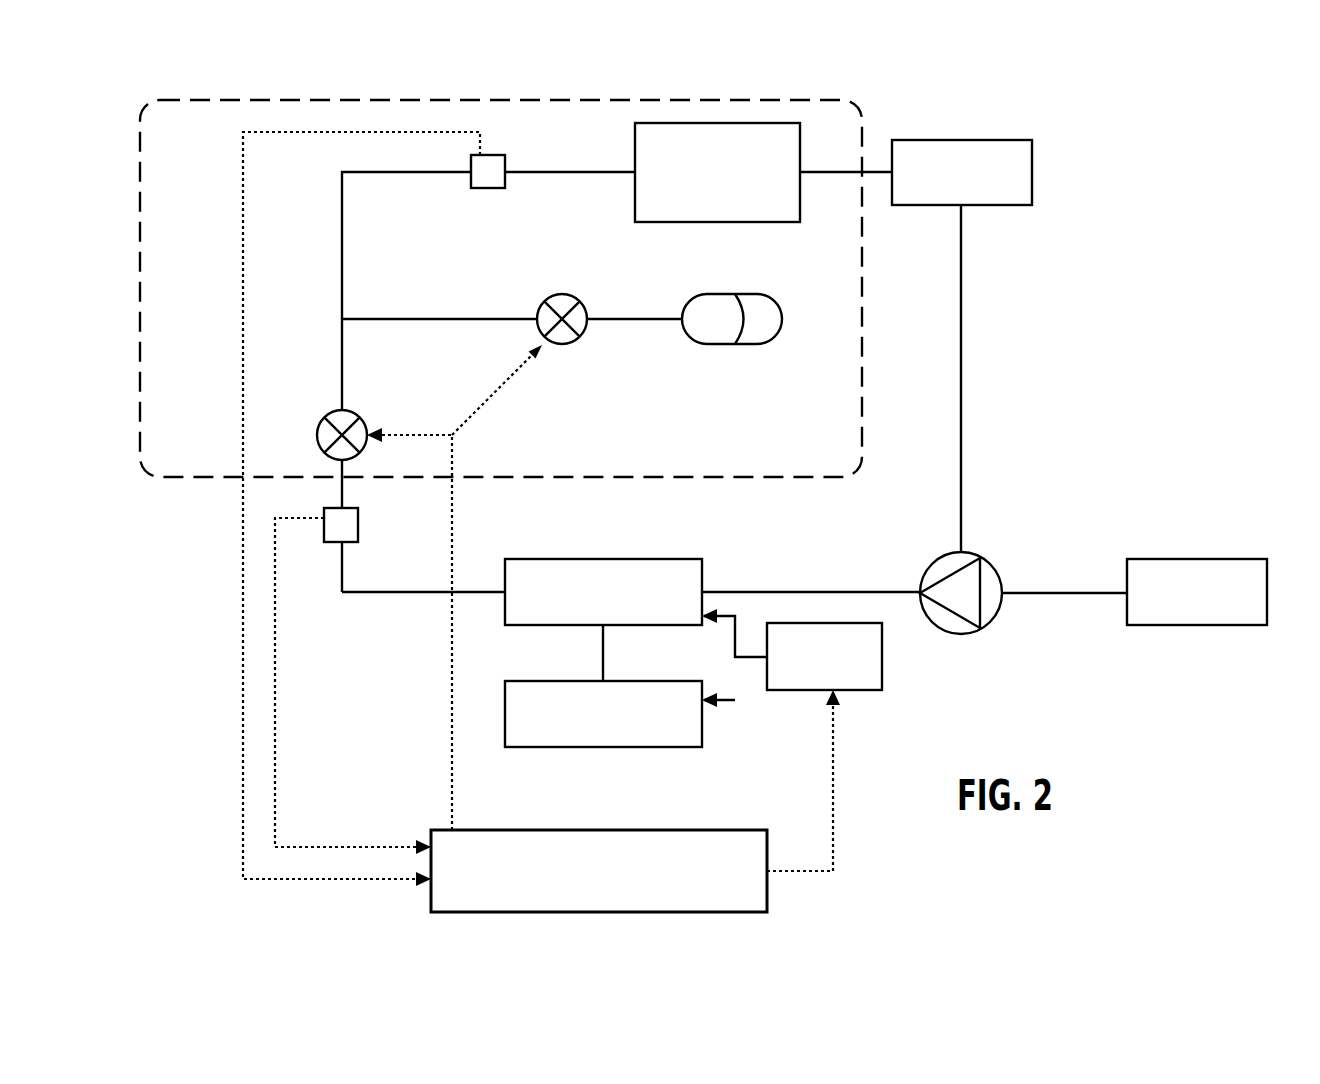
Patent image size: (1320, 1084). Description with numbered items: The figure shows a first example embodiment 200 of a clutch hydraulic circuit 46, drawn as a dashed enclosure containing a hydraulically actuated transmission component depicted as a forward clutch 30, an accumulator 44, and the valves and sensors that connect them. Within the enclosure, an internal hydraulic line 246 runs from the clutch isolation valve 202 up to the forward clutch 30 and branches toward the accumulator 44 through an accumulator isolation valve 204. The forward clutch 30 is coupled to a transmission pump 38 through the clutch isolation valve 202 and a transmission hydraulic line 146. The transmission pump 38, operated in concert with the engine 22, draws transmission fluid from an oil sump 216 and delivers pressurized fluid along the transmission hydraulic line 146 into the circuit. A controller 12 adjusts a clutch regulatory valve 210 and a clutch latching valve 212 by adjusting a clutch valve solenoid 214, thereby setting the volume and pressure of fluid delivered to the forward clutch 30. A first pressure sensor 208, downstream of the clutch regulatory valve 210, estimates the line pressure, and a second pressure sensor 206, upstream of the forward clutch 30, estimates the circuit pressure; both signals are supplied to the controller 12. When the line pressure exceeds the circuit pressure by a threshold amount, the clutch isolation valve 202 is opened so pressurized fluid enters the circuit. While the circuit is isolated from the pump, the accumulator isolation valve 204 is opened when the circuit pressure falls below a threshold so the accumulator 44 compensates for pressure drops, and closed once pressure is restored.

The clutch hydraulic circuit 46 is at (866, 112).
The first example embodiment 200 is at (1150, 195).
The fuel vapor line 246 is at (342, 275).
The second pressure sensor 206 is at (497, 155).
The forward clutch 30 is at (729, 185).
The oil sump 216 is at (962, 346).
The accumulator isolation valve 204 is at (563, 293).
The accumulator 44 is at (762, 294).
The clutch isolation valve 202 is at (350, 412).
The first pressure sensor 208 is at (350, 543).
The transmission hydraulic line 146 is at (423, 593).
The clutch regulatory valve 210 is at (620, 605).
The clutch latching valve 212 is at (603, 714).
The clutch valve solenoid 214 is at (841, 670).
The transmission pump 38 is at (970, 553).
The engine 22 is at (1208, 605).
The controller 12 is at (651, 884).